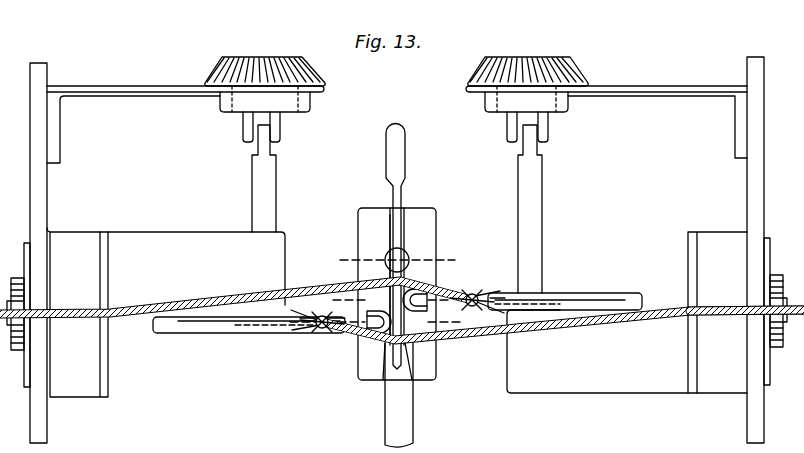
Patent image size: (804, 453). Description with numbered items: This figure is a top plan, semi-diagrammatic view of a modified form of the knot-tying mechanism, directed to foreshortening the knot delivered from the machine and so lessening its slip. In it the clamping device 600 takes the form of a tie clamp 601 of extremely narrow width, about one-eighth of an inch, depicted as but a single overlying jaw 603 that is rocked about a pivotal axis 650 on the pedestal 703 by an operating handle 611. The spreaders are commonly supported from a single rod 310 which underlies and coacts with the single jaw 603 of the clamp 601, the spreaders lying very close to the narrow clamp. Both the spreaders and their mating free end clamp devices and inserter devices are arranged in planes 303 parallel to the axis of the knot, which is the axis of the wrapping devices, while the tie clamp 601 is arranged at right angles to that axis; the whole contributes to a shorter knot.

The planes of symmetry 303 is at (440, 290).
The supporting rod 310 is at (405, 432).
The clamping device 600 is at (378, 294).
The tie clamp 601 is at (383, 362).
The movable jaw 603 is at (415, 336).
The operating handle 611 is at (405, 152).
The pivotal axis 650 is at (383, 257).
The pedestal 703 is at (405, 234).